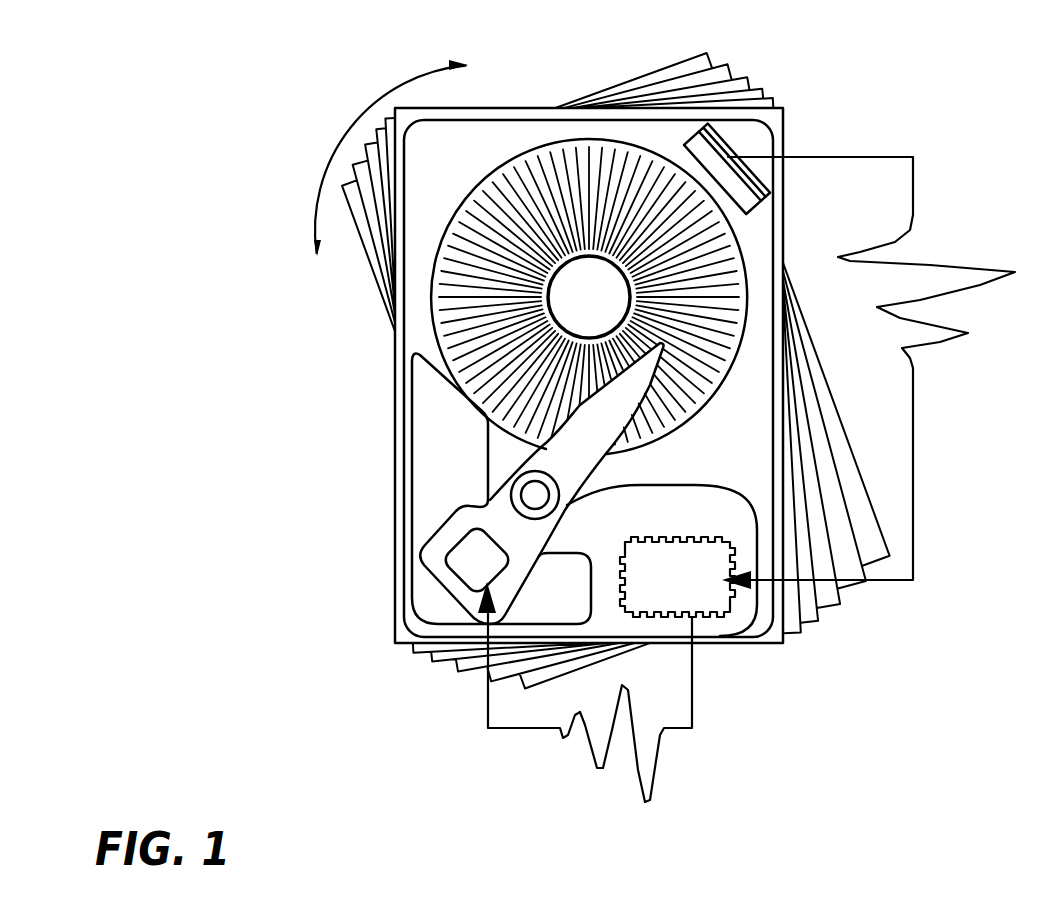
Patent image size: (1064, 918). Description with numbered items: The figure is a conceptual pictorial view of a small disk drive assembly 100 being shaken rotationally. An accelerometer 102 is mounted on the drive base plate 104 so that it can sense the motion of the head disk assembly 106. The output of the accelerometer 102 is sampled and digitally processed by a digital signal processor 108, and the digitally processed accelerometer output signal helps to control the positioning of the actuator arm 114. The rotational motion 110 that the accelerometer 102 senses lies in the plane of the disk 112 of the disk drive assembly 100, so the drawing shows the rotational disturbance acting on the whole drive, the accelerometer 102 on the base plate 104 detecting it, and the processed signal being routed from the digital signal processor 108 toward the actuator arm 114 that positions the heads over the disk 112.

The disk drive assembly 100 is at (322, 401).
The accelerometer 102 is at (718, 134).
The drive base plate 104 is at (740, 147).
The head disk assembly 106 is at (706, 455).
The digital signal processor 108 is at (711, 601).
The rotational motion 110 is at (338, 138).
The disk 112 is at (453, 252).
The actuator arm 114 is at (587, 426).